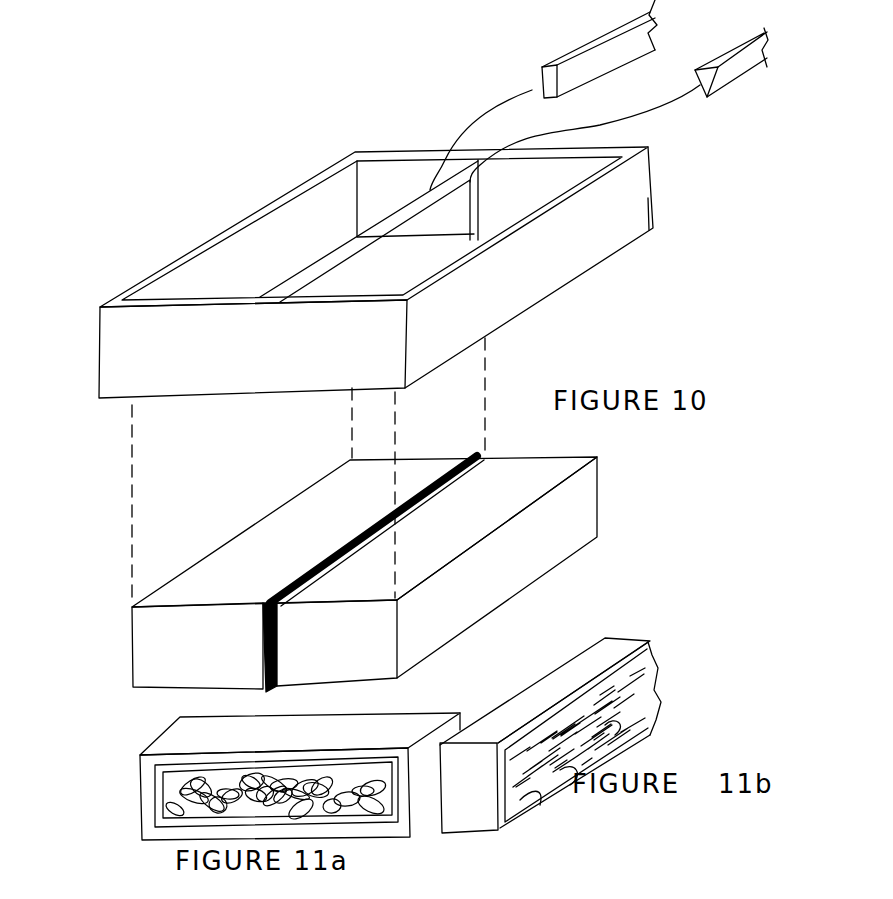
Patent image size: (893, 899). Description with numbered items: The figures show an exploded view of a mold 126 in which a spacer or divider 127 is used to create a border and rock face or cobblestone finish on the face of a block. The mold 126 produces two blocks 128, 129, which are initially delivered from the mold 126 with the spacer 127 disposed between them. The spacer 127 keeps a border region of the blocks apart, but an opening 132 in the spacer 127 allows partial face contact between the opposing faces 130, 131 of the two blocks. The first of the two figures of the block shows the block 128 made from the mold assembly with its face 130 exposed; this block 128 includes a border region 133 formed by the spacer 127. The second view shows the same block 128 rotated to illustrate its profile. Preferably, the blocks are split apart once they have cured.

In FIG. 10, the mold 126 is at (247, 217).
In FIG. 10, the spacer or divider 127 is at (393, 212).
In FIG. 10, the block 128 is at (247, 562).
In FIG. 11A, the block 128 is at (210, 742).
In FIG. 11B, the block 128 is at (617, 644).
In FIG. 10, the block 129 is at (567, 510).
In FIG. 10, the face 130 is at (258, 635).
In FIG. 11A, the face 130 is at (165, 790).
In FIG. 11B, the face 130 is at (657, 680).
In FIG. 10, the face 131 is at (280, 643).
In FIG. 10, the opening 132 is at (400, 257).
In FIG. 11A, the border region 133 is at (148, 815).
In FIG. 11B, the border region 133 is at (542, 715).